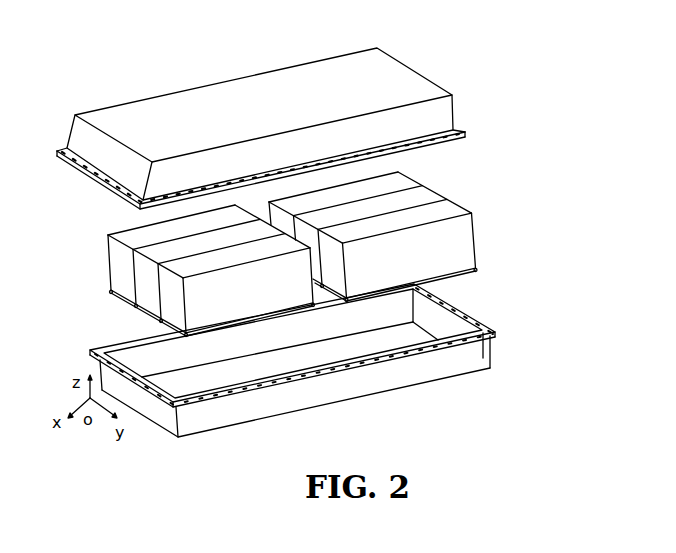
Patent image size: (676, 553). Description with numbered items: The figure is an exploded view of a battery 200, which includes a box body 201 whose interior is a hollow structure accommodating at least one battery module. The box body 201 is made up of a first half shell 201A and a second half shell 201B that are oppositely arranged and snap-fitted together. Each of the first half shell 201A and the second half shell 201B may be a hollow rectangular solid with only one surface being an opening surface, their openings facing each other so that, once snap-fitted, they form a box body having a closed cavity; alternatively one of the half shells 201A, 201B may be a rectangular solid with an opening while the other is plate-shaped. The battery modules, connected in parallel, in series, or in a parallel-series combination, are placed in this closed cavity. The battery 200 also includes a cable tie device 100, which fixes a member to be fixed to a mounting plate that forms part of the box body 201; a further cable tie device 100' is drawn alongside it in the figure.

The battery 200 is at (325, 224).
The box body 201 is at (330, 242).
The second half shell 201B is at (444, 125).
The first half shell 201A is at (319, 360).
The cable tie device 100 is at (181, 271).
The battery module 100' is at (262, 237).